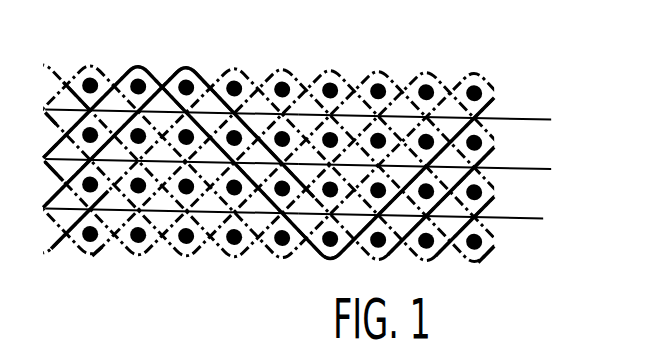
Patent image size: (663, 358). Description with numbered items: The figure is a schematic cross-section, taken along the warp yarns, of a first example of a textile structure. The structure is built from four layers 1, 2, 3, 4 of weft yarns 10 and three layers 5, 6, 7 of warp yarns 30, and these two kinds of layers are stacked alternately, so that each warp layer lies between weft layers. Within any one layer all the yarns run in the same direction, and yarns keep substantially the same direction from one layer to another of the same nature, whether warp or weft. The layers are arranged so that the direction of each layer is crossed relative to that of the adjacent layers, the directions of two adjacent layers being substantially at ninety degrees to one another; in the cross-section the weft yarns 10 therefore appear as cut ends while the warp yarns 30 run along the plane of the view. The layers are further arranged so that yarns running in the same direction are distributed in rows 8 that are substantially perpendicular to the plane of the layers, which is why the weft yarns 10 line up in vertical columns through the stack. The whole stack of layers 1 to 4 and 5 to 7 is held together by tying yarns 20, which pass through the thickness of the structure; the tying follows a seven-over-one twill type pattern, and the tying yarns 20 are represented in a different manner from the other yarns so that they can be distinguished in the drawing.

The layer of weft yarns 1 is at (492, 93).
The layer of weft yarns 2 is at (492, 146).
The layer of weft yarns 3 is at (492, 194).
The layer of weft yarns 4 is at (492, 252).
The layer of warp yarns 5 is at (558, 115).
The layer of warp yarns 6 is at (557, 167).
The layer of warp yarns 7 is at (554, 219).
The rows 8 is at (281, 258).
The weft yarns 10 is at (186, 78).
The tying yarns 20 is at (97, 67).
The warp yarns 30 is at (518, 117).